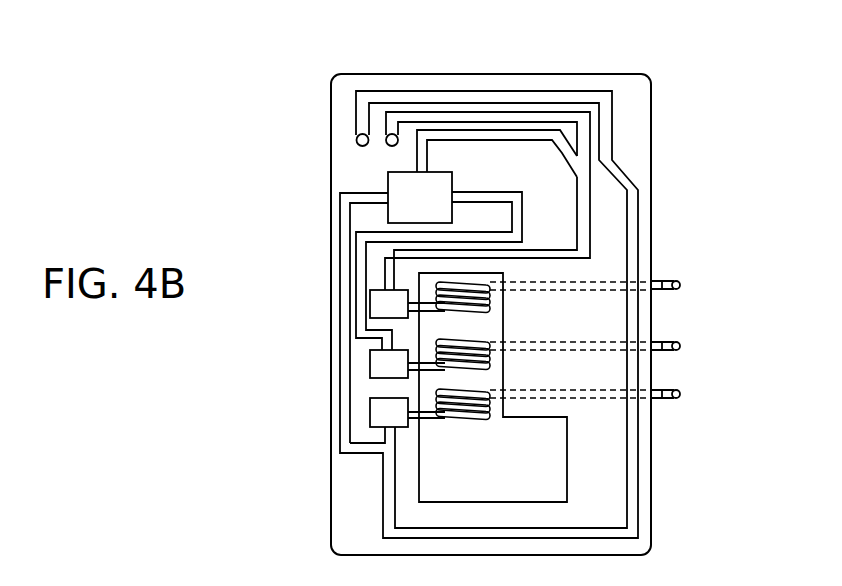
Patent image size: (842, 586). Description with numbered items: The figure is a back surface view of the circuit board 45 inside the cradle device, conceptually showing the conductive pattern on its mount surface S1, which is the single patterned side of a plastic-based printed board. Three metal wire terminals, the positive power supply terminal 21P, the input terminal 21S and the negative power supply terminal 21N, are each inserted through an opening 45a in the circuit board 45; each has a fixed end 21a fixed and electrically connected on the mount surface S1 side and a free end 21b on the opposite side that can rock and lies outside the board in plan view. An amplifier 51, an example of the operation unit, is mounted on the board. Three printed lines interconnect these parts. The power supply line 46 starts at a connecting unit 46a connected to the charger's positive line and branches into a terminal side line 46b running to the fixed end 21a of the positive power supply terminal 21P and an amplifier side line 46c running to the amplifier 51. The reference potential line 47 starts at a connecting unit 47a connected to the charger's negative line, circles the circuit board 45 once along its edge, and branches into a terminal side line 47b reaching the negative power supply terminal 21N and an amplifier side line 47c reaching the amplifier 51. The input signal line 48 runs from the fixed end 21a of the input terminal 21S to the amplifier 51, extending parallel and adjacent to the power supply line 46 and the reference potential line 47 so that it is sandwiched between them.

The mount surface S1 is at (638, 86).
The circuit board 45 is at (643, 110).
The opening 45a is at (567, 460).
The power supply line 46 is at (435, 113).
The connecting unit 46a is at (392, 146).
The terminal side line 46b is at (582, 205).
The amplifier side line 46c is at (567, 150).
The reference potential line 47 is at (496, 97).
The connecting unit 47a is at (355, 137).
The terminal side line 47b is at (385, 435).
The amplifier side line 47c is at (343, 387).
The input signal line 48 is at (356, 273).
The amplifier 51 is at (396, 183).
The fixed end 21a is at (417, 415).
The free end 21b is at (677, 398).
The positive power supply terminal 21P is at (672, 283).
The input terminal 21S is at (672, 344).
The negative power supply terminal 21N is at (676, 392).